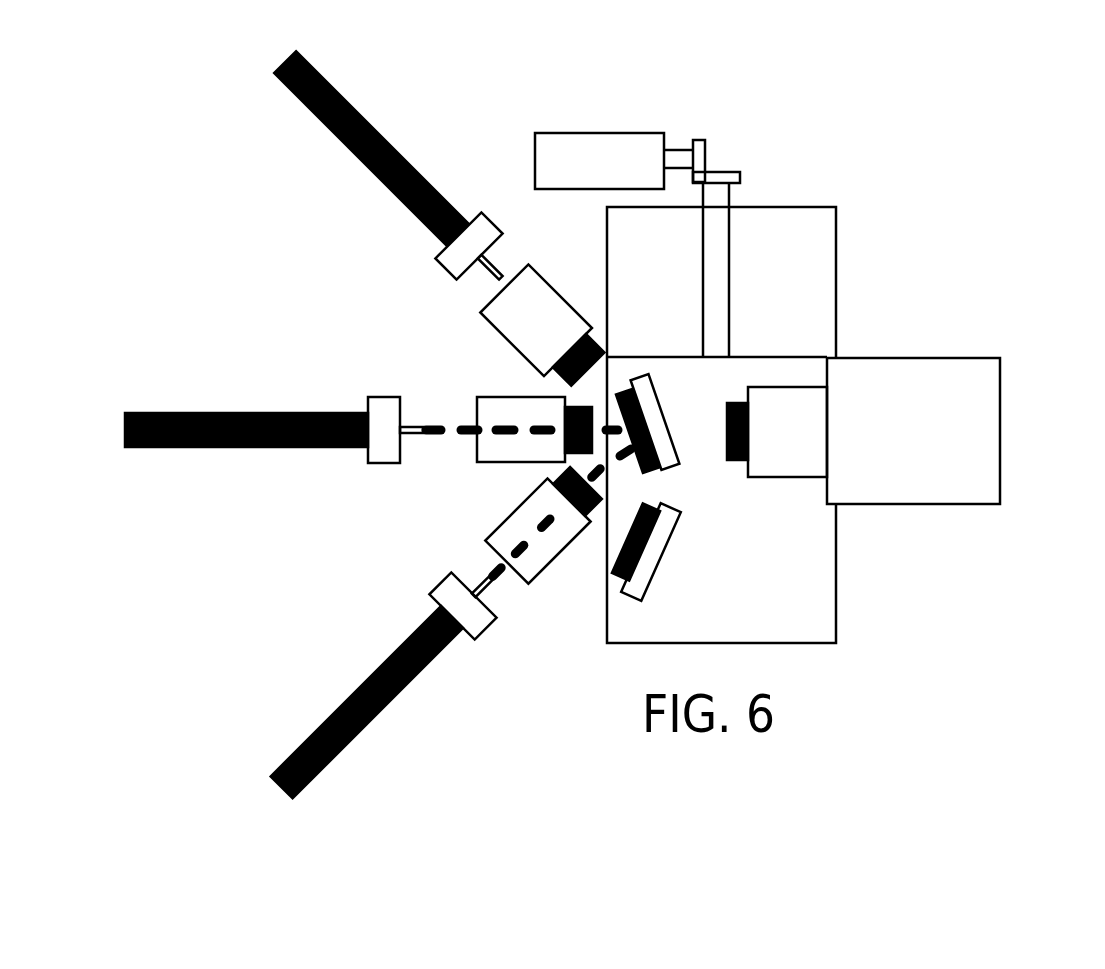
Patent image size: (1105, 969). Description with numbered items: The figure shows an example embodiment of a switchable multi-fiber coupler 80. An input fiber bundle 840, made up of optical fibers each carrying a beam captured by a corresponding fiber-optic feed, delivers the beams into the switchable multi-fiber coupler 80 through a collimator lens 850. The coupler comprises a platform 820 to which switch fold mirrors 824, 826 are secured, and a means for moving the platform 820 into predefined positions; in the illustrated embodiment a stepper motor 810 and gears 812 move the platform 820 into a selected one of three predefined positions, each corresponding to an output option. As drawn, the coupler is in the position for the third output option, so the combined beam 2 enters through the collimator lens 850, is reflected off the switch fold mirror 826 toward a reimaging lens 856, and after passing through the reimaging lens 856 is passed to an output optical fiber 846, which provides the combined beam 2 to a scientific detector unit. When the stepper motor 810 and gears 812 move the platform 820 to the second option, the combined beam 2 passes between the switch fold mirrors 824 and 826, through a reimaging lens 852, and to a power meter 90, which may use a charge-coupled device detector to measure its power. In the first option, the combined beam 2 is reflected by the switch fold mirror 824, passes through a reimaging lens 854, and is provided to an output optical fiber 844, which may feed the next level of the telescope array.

The switchable multi-fiber coupler 80 is at (975, 64).
The stepper motor 810 is at (616, 136).
The gears 812 is at (752, 232).
The platform 820 is at (765, 425).
The power meter 90 is at (961, 431).
The reimaging lens 852 is at (777, 444).
The switch fold mirror 826 is at (684, 417).
The switch fold mirror 824 is at (688, 552).
The output optical fiber 844 is at (388, 165).
The reimaging lens 854 is at (590, 324).
The input fiber bundle 840 is at (371, 417).
The collimator lens 850 is at (523, 414).
The output optical fiber 846 is at (393, 685).
The reimaging lens 856 is at (518, 525).
The combined beam 2 is at (547, 545).